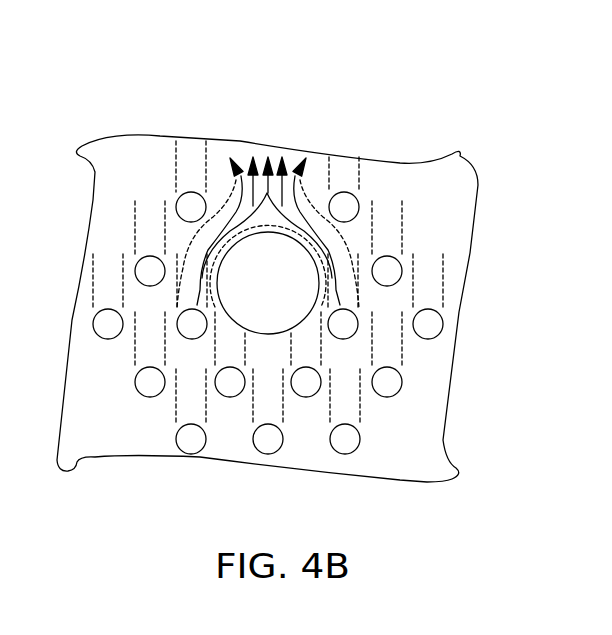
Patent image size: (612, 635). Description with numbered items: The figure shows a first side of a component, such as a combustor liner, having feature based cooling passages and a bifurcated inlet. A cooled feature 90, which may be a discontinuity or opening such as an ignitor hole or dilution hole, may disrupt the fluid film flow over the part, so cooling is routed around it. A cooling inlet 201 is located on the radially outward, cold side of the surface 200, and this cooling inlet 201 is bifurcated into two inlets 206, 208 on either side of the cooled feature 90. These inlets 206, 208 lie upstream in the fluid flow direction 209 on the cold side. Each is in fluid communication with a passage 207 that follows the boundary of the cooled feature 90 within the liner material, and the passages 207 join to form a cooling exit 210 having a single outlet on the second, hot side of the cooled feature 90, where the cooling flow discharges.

The surface 200 is at (119, 90).
The cooled feature 90 is at (287, 288).
The cooling inlet 201 is at (387, 382).
The inlet 206 is at (340, 305).
The passage 207 is at (362, 302).
The inlet 208 is at (197, 305).
The fluid flow direction 209 is at (214, 234).
The cooling exit 210 is at (315, 153).